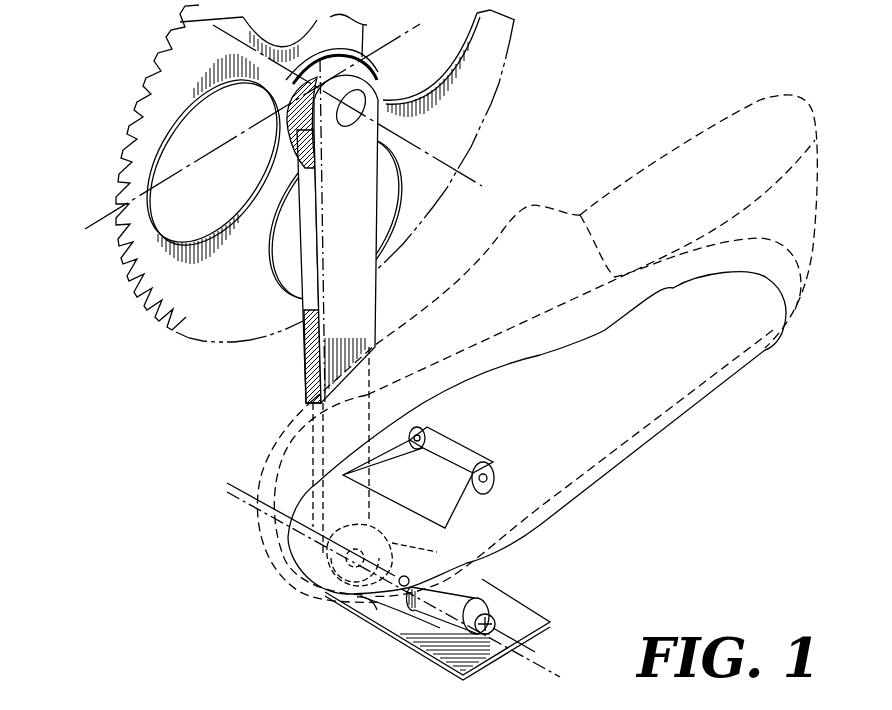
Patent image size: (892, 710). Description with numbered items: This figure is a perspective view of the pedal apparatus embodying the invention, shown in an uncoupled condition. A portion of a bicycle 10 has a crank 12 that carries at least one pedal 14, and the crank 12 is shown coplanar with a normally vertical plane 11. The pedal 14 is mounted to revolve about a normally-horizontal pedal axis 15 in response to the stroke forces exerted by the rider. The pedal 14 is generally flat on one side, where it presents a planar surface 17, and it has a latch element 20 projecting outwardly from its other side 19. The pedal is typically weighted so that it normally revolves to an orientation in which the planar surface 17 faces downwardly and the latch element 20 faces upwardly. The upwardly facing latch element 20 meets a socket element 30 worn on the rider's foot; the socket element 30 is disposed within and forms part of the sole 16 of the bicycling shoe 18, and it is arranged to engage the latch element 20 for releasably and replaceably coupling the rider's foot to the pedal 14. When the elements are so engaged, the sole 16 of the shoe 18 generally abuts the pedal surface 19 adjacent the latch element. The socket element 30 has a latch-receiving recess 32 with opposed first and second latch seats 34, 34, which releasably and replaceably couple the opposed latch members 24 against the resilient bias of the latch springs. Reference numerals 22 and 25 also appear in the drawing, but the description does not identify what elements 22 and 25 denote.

The bicycle 10 is at (150, 328).
The normally vertical plane 11 is at (405, 33).
The crank 12 is at (376, 293).
The pedal 14 is at (437, 606).
The pedal axis 15 is at (240, 500).
The sole 16 is at (640, 413).
The planar surface 17 is at (430, 665).
The shoe 18 is at (817, 302).
The other side of the pedal 19 is at (360, 600).
The latch element 20 is at (470, 597).
The clip 22 is at (400, 630).
The latch members 24 is at (430, 547).
The spindle axis 25 is at (240, 480).
The socket element 30 is at (416, 426).
The latch-receiving recess 32 is at (441, 461).
The latch seats 34 is at (432, 438).